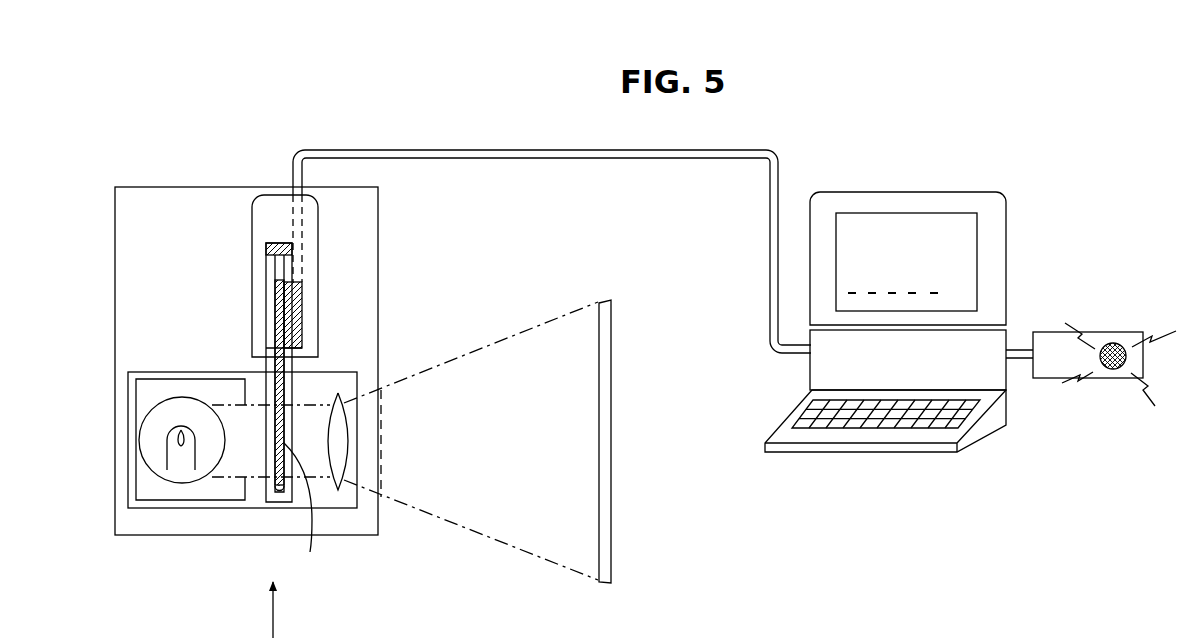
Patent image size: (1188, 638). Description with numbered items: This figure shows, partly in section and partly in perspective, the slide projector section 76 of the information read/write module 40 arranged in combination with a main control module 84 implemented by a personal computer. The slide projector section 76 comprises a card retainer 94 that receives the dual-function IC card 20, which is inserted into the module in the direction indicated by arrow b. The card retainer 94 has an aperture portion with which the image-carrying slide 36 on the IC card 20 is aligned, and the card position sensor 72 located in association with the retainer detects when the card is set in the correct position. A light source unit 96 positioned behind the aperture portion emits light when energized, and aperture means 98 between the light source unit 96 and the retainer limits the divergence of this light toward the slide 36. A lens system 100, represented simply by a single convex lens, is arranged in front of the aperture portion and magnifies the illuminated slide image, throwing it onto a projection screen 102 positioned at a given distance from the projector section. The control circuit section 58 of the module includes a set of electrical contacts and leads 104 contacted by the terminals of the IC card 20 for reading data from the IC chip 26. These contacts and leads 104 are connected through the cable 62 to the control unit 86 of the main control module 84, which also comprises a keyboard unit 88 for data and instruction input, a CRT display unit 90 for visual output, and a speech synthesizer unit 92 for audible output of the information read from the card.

The information read/write module 40 is at (144, 184).
The control circuit section 58 is at (318, 243).
The cable 62 is at (561, 160).
The dual-function IC card 20 is at (264, 366).
The card position sensor 72 is at (272, 243).
The IC chip 26 is at (275, 314).
The electrical contacts and leads 104 is at (302, 312).
The image-carrying slide 36 is at (314, 508).
The card retainer 94 is at (267, 492).
The slide projector section 76 is at (168, 370).
The light source unit 96 is at (157, 477).
The aperture means 98 is at (255, 448).
The lens system 100 is at (350, 445).
The projection screen 102 is at (611, 460).
The main control module 84 is at (1038, 214).
The CRT display unit 90 is at (932, 192).
The control unit 86 is at (810, 372).
The keyboard unit 88 is at (872, 452).
The speech synthesizer unit 92 is at (1107, 378).
The card insertion direction arrow b is at (275, 624).